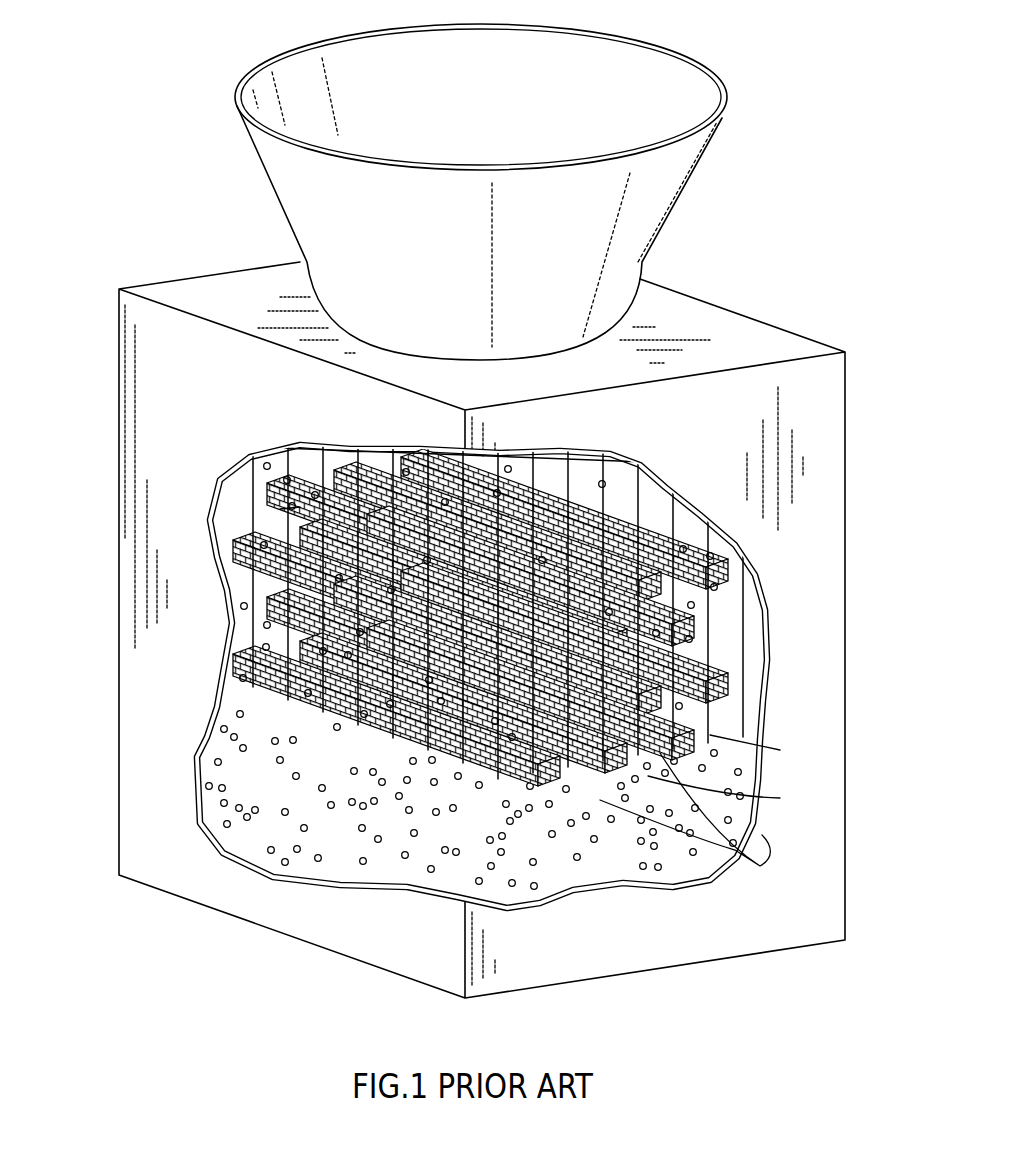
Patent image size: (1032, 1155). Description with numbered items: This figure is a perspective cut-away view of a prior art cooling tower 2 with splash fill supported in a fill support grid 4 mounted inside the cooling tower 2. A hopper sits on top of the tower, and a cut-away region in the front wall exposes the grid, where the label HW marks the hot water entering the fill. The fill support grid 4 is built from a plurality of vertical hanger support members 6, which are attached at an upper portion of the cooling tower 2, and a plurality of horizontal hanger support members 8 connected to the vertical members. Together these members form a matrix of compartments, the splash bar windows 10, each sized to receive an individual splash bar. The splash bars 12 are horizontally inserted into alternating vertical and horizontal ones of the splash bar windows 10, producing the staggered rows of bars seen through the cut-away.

The cooling tower 2 is at (773, 165).
The fill support grid 4 is at (624, 489).
The vertical hanger support members 6 is at (712, 682).
The horizontal hanger support members 8 is at (780, 798).
The splash bar windows 10 is at (648, 757).
The splash bars 12 is at (275, 707).
The hot water HW is at (300, 507).